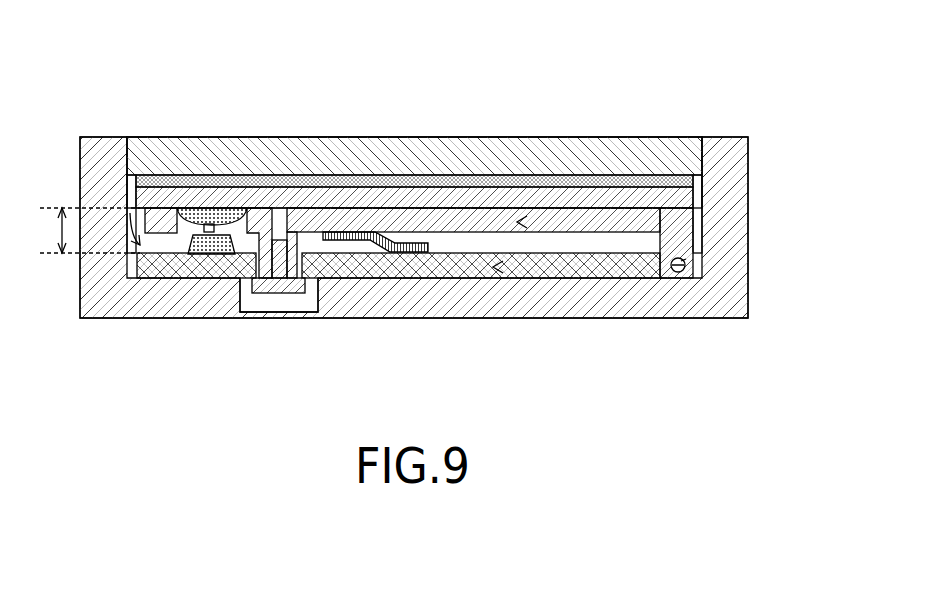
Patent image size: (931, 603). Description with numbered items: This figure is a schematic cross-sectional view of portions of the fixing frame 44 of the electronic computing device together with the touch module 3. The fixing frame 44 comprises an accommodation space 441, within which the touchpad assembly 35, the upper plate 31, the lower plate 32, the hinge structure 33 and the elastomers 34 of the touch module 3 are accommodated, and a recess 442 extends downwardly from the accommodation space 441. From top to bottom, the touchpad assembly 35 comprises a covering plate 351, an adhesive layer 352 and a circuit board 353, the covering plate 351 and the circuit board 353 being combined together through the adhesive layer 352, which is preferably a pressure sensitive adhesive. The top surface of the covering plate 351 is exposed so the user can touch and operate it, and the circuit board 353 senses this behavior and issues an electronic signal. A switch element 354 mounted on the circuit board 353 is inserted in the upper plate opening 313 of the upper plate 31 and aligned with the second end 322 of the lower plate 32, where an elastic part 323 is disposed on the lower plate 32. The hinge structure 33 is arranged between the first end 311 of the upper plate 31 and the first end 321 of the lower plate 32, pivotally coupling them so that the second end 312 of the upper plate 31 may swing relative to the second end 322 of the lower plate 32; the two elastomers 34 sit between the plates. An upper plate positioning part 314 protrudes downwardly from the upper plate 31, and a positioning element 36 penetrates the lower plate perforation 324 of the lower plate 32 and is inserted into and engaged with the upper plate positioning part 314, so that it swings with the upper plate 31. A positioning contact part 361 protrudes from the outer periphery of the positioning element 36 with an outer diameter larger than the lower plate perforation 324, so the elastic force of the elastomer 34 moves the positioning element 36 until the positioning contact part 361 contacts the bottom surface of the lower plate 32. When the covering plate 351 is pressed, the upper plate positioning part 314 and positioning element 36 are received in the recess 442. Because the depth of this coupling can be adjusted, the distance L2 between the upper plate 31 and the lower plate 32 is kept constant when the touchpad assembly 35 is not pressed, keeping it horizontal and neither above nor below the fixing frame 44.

The touch module 3 is at (628, 85).
The fixing frame 44 is at (727, 238).
The accommodation space 441 is at (703, 223).
The second end of the upper plate 312 is at (127, 140).
The touchpad assembly 35 is at (130, 8).
The covering plate 351 is at (435, 112).
The adhesive layer 352 is at (662, 112).
The circuit board 353 is at (550, 112).
The upper plate opening 313 is at (160, 217).
The switch element 354 is at (217, 205).
The lower plate perforation 324 is at (257, 263).
The positioning element 36 is at (285, 258).
The upper plate positioning part 314 is at (350, 254).
The first end of the upper plate 311 is at (650, 217).
The upper plate 31 is at (518, 222).
The hinge structure 33 is at (687, 273).
The second end of the lower plate 322 is at (162, 268).
The first end of the lower plate 321 is at (633, 263).
The lower plate 32 is at (494, 267).
The elastic part 323 is at (187, 245).
The positioning contact part 361 is at (299, 293).
The recess 442 is at (280, 302).
The elastomer 34 is at (430, 250).
The distance between the upper plate and the lower plate L2 is at (79, 230).